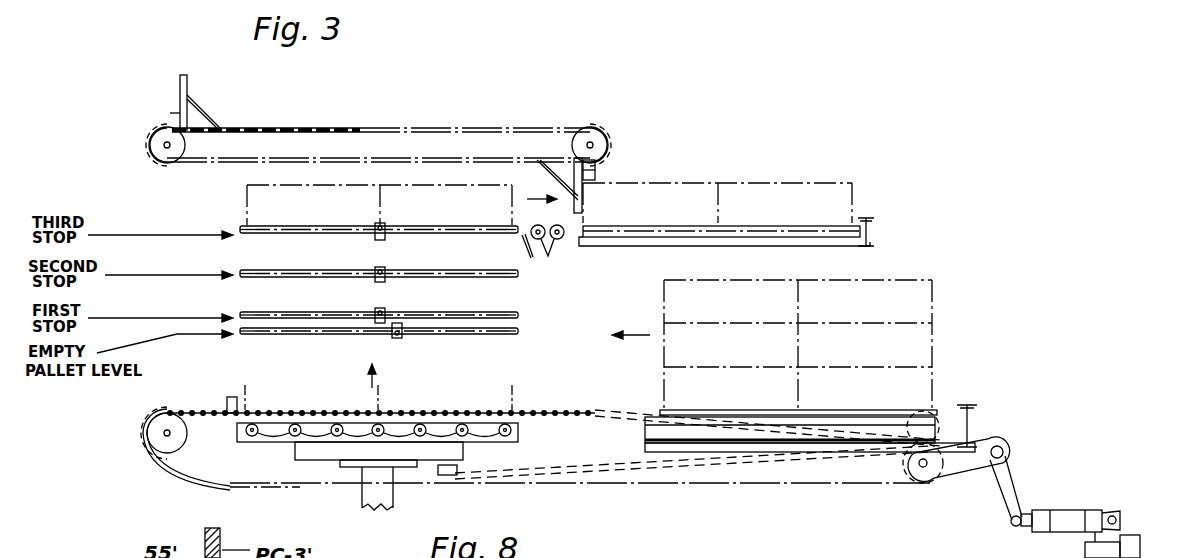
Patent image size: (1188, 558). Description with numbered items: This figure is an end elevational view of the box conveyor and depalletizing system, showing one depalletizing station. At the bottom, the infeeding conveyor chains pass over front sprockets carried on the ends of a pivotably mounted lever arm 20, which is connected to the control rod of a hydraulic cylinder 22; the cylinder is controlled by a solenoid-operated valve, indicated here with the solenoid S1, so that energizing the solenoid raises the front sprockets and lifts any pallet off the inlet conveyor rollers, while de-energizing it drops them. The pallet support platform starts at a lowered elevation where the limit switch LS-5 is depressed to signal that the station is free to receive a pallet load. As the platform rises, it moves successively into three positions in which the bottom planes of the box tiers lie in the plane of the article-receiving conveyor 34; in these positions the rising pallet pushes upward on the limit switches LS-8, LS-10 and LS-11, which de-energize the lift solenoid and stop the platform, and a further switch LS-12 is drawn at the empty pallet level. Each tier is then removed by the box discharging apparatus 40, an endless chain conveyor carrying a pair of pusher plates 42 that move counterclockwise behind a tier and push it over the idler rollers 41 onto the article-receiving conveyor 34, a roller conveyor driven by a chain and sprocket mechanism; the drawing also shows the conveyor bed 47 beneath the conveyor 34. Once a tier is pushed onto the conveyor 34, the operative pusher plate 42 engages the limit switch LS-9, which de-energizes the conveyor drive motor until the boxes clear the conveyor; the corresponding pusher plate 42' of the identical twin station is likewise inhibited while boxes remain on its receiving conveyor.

The box discharging apparatus 40 is at (343, 129).
The pusher plate 42' is at (173, 102).
The pusher plate 42 is at (592, 185).
The limit switch LS-9 is at (594, 174).
The article-receiving conveyor 34 is at (762, 223).
The receiving platform 47 is at (725, 232).
The idler rollers 41 is at (545, 255).
The limit switch LS-11 is at (387, 233).
The limit switch LS-10 is at (387, 277).
The limit switch LS-8 is at (387, 311).
The limit switch LS-12 is at (401, 338).
The limit switch LS-5 is at (458, 468).
The lever arm 20 is at (968, 465).
The hydraulic cylinder 22 is at (1062, 510).
The solenoid valve S1 is at (1130, 535).